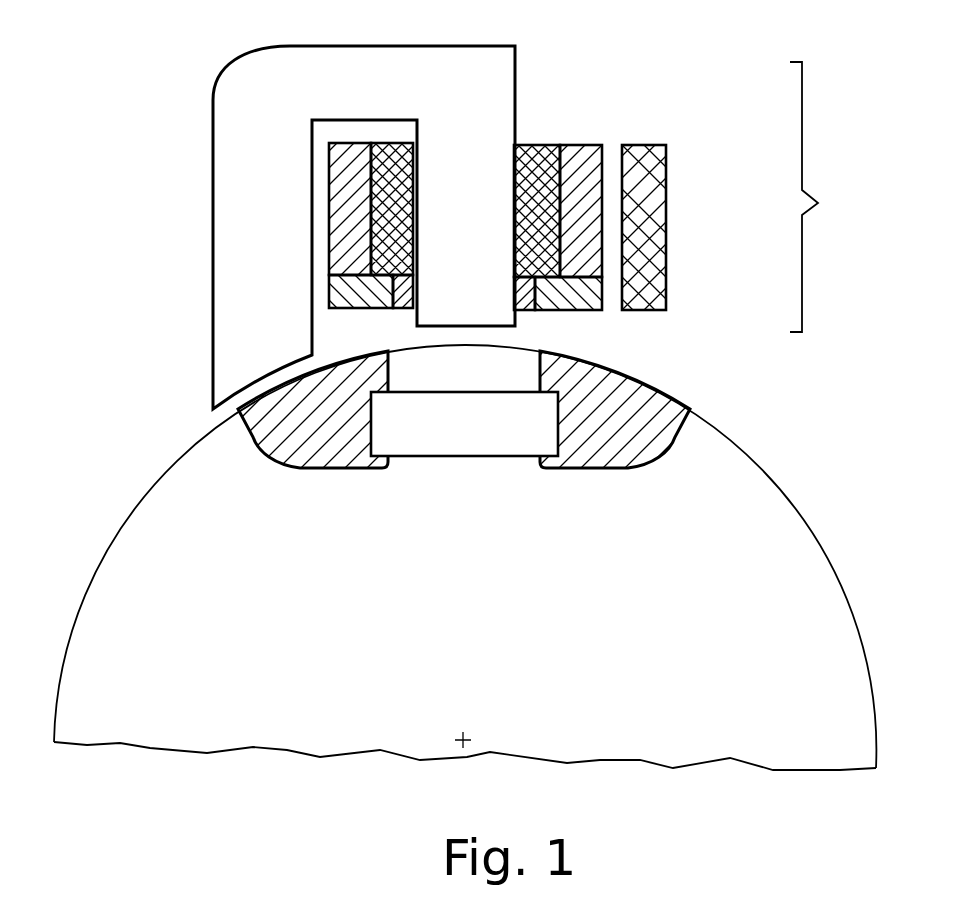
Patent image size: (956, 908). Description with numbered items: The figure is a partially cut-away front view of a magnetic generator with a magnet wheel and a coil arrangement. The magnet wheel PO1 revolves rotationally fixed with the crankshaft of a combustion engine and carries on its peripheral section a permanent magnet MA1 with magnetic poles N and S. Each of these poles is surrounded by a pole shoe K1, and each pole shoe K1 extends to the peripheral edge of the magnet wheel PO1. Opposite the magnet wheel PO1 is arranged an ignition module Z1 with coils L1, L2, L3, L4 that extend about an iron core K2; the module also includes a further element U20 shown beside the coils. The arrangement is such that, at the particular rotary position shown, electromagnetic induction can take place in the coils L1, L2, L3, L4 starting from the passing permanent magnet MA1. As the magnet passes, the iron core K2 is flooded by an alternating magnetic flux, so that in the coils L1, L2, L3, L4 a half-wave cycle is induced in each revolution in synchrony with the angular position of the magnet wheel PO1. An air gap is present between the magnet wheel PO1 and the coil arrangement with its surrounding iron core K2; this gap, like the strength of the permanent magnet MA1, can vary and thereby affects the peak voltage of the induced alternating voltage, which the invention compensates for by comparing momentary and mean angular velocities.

The magnet wheel PO1 is at (125, 518).
The pole shoe K1 is at (322, 458).
The permanent magnet MA1 is at (487, 443).
The iron core K2 is at (500, 78).
The coil L1 is at (593, 297).
The coil L2 is at (535, 160).
The coil L3 is at (582, 157).
The coil L4 is at (523, 310).
The additional coil U20 is at (648, 162).
The ignition module Z1 is at (834, 197).